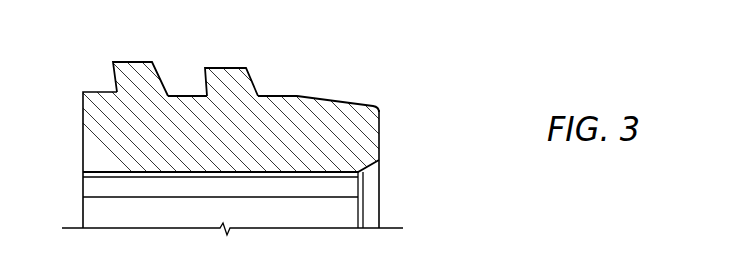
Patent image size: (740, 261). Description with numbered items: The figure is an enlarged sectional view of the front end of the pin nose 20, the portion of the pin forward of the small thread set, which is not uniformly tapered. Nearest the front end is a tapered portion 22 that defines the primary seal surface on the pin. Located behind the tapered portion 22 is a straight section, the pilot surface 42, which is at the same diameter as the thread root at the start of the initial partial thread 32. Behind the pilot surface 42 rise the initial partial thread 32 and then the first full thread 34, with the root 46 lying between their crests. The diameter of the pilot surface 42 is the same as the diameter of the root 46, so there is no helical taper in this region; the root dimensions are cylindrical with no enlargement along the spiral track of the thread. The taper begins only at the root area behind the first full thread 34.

The pin nose 20 is at (362, 135).
The tapered portion 22 is at (347, 100).
The initial partial thread 32 is at (242, 80).
The first full thread 34 is at (130, 75).
The pilot surface 42 is at (285, 94).
The root 46 is at (188, 95).